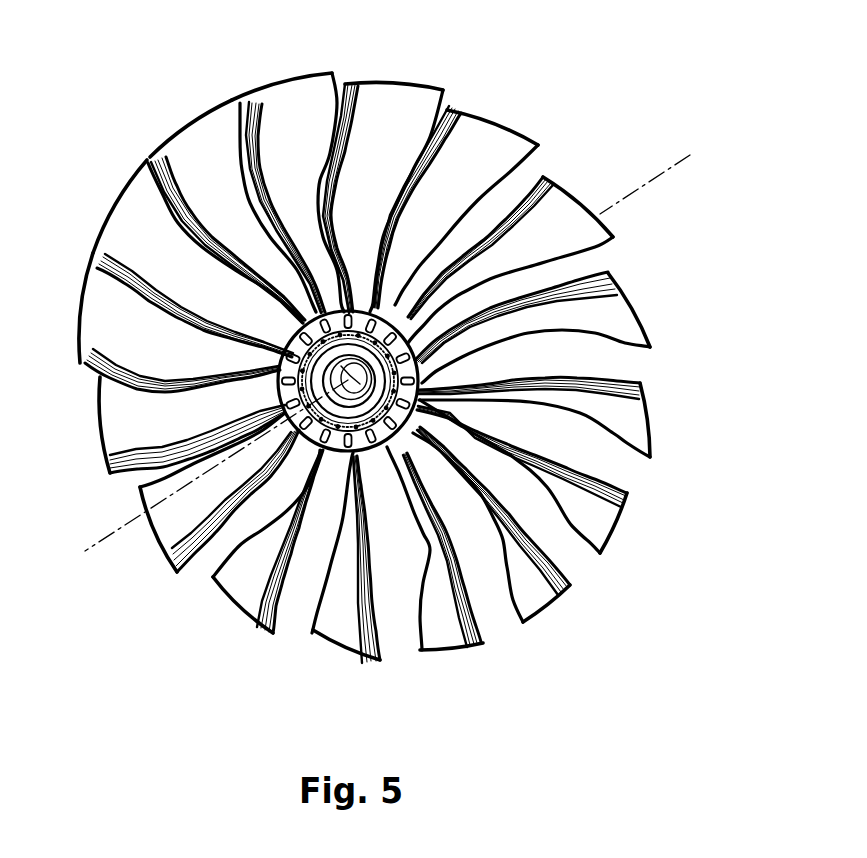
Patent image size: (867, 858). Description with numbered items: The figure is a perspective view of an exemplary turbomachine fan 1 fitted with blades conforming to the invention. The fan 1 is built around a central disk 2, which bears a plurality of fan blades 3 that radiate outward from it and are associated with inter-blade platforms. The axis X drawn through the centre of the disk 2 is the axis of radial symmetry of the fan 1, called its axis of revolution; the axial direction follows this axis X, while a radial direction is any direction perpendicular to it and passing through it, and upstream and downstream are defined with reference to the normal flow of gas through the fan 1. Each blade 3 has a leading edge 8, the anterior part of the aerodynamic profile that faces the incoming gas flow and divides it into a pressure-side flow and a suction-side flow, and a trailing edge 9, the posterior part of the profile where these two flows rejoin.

The fan 1 is at (563, 103).
The disk 2 is at (320, 372).
The blade 3 is at (629, 324).
The leading edge 8 is at (614, 382).
The trailing edge 9 is at (630, 445).
The axis X is at (660, 175).